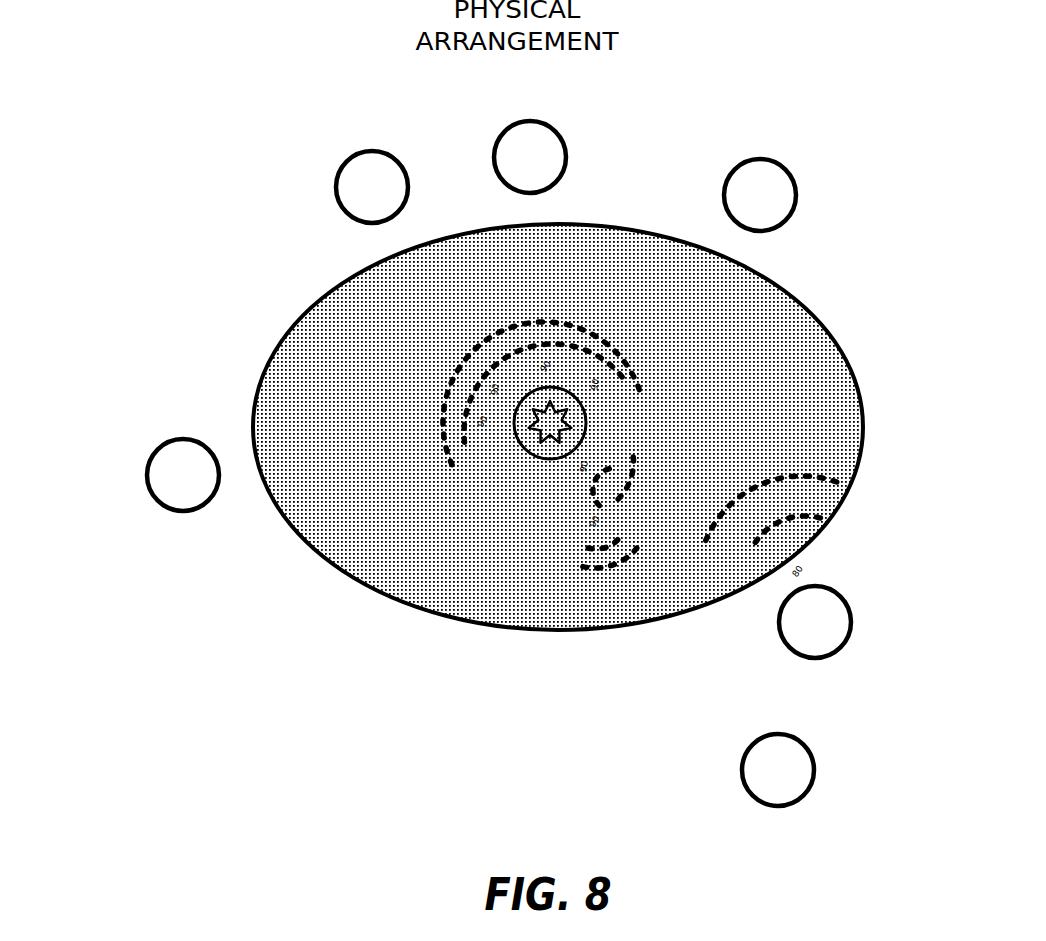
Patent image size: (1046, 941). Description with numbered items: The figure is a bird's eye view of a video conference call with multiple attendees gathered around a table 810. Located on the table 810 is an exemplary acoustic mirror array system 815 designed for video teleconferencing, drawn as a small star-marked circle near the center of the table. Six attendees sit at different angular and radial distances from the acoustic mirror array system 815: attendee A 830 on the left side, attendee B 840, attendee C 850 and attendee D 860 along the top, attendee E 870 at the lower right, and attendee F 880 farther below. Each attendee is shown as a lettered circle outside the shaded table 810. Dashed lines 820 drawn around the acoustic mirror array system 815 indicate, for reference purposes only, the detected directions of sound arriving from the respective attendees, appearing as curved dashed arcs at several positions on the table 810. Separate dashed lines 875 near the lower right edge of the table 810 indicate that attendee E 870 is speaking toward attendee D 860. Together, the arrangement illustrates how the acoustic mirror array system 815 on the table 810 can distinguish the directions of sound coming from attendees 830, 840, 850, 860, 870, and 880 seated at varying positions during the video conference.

The table 810 is at (342, 364).
The acoustic mirror array system 815 is at (535, 457).
The dashed lines 820 is at (642, 368).
The attendee A 830 is at (157, 483).
The attendee B 840 is at (366, 168).
The attendee C 850 is at (567, 152).
The attendee D 860 is at (783, 173).
The attendee E 870 is at (780, 642).
The dashed lines 875 is at (820, 511).
The attendee F 880 is at (803, 760).